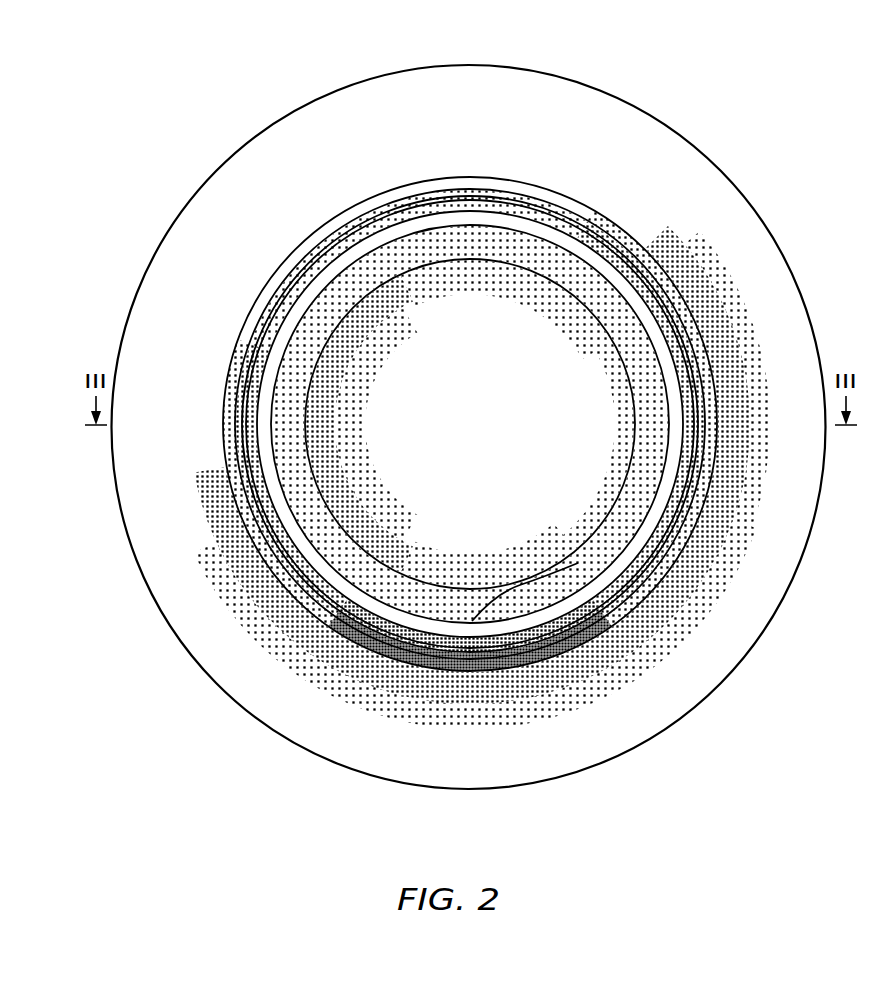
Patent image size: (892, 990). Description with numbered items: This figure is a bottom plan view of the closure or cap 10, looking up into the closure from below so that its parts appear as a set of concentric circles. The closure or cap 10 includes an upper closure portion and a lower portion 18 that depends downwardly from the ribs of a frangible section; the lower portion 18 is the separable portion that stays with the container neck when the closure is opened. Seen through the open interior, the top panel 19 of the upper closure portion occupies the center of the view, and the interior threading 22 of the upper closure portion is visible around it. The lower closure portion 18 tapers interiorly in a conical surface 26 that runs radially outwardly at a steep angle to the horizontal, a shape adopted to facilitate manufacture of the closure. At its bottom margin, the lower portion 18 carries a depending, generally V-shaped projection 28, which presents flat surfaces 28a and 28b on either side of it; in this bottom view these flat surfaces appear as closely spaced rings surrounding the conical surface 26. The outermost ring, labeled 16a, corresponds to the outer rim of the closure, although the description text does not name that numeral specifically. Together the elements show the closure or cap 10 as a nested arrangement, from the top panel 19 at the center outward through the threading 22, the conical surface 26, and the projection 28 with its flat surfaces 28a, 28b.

The closure or cap 10 is at (469, 447).
The outer rim of dish 16a is at (367, 758).
The lower portion 18 is at (660, 600).
The top panel 19 is at (471, 476).
The interior threading 22 is at (540, 593).
The conical surface 26 is at (672, 415).
The V-shaped projection 28 is at (660, 309).
The flat surface 28a is at (620, 238).
The flat surface 28b is at (673, 355).